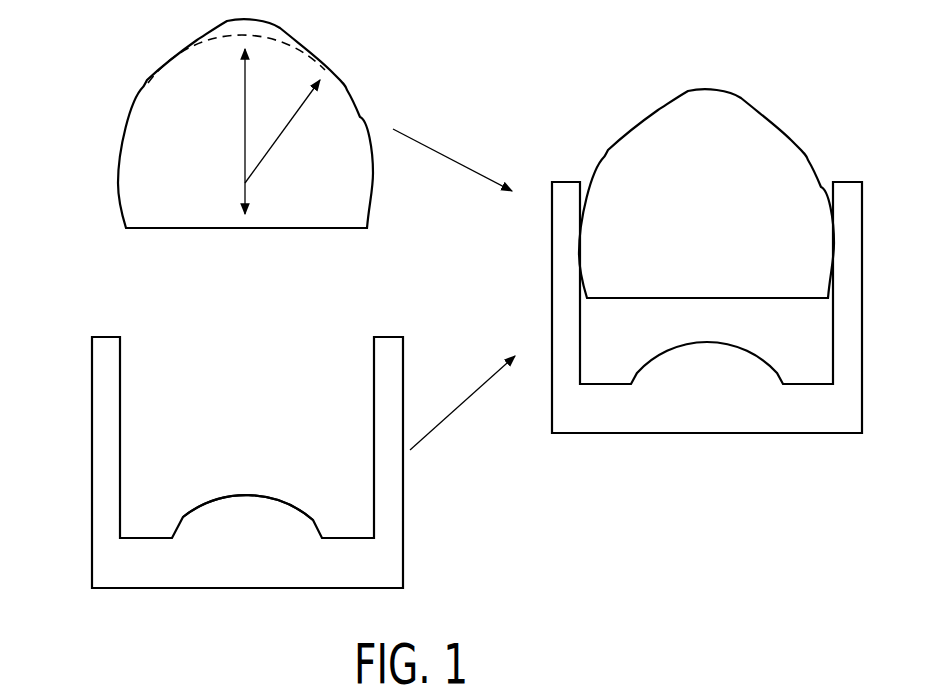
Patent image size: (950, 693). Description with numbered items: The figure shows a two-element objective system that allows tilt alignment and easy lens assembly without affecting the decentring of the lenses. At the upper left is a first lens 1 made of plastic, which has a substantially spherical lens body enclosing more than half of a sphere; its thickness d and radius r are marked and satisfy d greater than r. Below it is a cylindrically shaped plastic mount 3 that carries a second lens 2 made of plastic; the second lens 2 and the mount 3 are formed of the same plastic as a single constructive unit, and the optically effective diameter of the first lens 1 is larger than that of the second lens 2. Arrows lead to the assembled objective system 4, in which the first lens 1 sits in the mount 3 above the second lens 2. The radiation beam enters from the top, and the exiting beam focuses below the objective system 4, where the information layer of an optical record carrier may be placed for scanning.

The first lens 1 is at (120, 212).
The second lens 2 is at (227, 518).
The cylindrically shaped plastic mount 3 is at (103, 431).
The objective system 4 is at (718, 503).